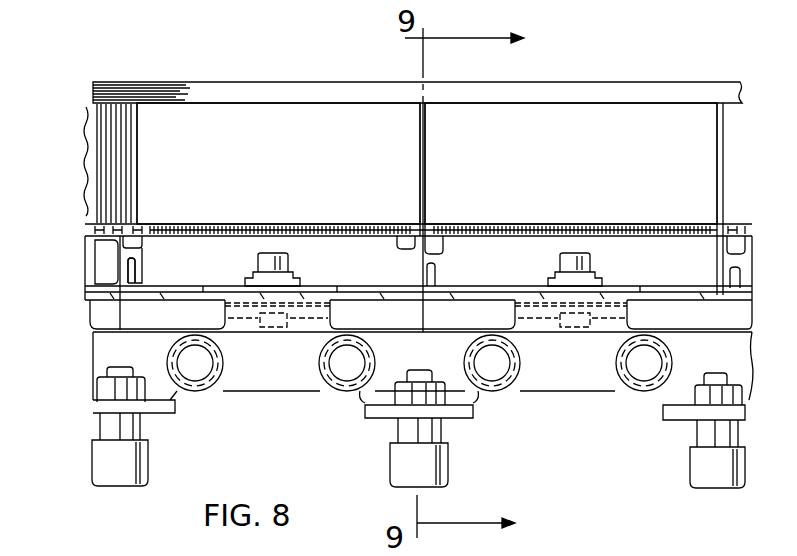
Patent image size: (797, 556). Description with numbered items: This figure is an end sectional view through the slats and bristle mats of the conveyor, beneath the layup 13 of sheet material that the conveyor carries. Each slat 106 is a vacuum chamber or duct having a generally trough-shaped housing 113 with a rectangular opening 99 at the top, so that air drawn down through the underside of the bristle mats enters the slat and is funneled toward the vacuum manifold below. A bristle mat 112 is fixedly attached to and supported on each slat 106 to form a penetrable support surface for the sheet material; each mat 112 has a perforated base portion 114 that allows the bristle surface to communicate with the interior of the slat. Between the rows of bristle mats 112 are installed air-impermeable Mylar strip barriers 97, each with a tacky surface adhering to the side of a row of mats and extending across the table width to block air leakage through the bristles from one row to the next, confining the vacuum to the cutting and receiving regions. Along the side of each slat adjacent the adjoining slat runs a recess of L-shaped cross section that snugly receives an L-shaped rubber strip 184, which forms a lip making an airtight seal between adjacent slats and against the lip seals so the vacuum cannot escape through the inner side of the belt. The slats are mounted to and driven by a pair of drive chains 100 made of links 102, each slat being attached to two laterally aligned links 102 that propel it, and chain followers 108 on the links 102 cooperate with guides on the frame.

The layup 13 is at (234, 80).
The bristle mat 112 is at (362, 132).
The Mylar strip barrier 97 is at (427, 137).
The rectangular opening 99 is at (148, 228).
The slat 106 is at (250, 250).
The perforated base portion 114 is at (305, 225).
The rubber strip 184 is at (138, 275).
The trough-shaped housing 113 is at (190, 290).
The drive chain 100 is at (82, 357).
The link 102 is at (272, 375).
The chain follower 108 is at (149, 452).